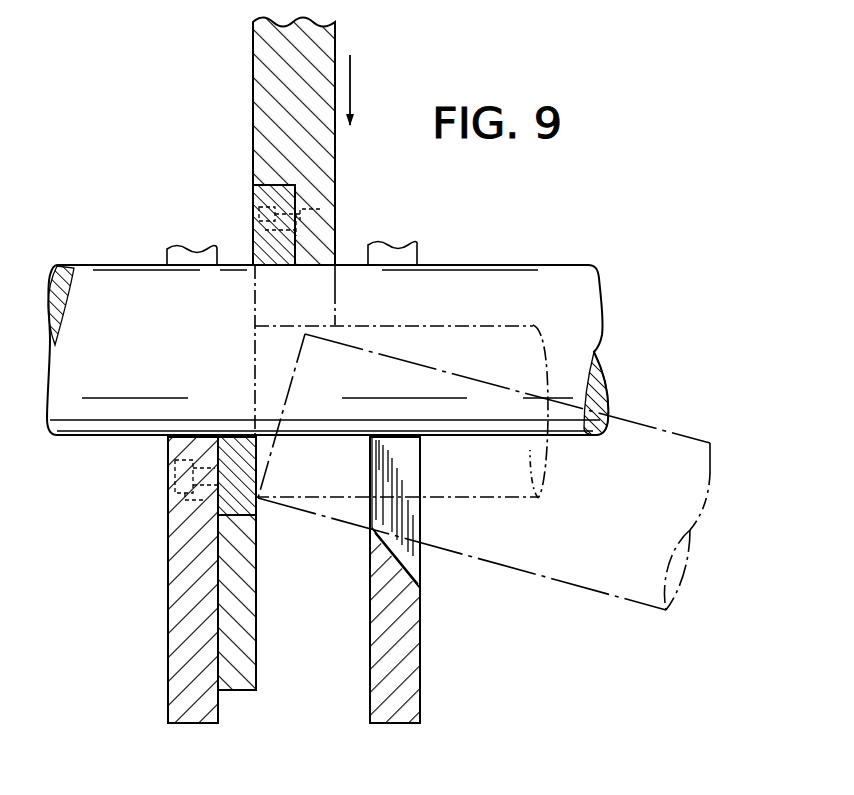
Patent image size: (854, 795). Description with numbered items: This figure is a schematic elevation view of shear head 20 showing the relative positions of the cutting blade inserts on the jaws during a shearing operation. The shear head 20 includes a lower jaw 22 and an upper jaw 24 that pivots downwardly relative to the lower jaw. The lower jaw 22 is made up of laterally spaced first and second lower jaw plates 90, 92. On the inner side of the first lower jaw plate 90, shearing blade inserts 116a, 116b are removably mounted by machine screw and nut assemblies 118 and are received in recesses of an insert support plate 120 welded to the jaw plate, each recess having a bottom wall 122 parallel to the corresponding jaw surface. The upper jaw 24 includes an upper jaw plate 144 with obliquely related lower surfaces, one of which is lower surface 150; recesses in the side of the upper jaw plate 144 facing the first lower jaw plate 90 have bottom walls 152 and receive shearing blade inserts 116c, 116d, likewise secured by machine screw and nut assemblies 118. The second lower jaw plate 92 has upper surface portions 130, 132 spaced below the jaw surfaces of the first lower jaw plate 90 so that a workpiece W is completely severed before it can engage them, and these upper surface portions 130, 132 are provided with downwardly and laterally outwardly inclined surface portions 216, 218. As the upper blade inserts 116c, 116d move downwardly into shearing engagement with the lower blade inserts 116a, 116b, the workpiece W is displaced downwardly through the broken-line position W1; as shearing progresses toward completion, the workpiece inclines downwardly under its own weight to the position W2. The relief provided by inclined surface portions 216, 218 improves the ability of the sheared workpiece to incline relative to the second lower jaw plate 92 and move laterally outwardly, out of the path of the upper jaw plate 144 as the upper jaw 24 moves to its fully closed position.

The shear head 20 is at (163, 121).
The lower jaw 22 is at (170, 675).
The upper jaw 24 is at (337, 35).
The first lower jaw plate 90 is at (170, 637).
The second lower jaw plate 92 is at (423, 678).
The shearing blade insert 116a is at (220, 497).
The shearing blade insert 116b is at (237, 476).
The shearing blade insert 116c is at (253, 203).
The shearing blade insert 116d is at (274, 225).
The machine screw and nut assemblies 118 is at (336, 216).
The insert support plate 120 is at (247, 668).
The bottom wall 122 is at (220, 508).
The upper surface portion 130 is at (373, 528).
The upper surface portion 132 is at (373, 482).
The upper jaw plate 144 is at (257, 68).
The lower surface 150 is at (317, 265).
The bottom wall 152 is at (254, 188).
The inclined surface portion 216 is at (412, 562).
The inclined surface portion 218 is at (412, 514).
The workpiece W is at (556, 265).
The broken line position of workpiece W1 is at (517, 322).
The inclined position of workpiece W2 is at (638, 422).